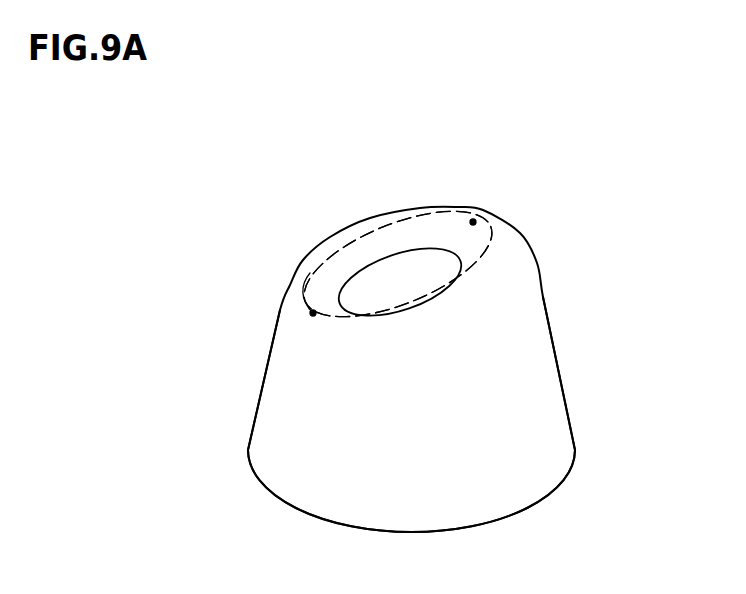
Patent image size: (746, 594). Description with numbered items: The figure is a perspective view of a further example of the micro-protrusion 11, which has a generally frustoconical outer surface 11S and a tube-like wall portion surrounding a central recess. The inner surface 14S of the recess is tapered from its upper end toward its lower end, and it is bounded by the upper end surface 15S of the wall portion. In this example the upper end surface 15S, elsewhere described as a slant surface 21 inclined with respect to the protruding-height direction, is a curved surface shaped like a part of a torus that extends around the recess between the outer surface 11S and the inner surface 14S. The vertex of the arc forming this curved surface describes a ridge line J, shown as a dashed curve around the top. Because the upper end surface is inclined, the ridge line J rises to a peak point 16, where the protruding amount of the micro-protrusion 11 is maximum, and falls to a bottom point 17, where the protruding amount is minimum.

The micro-protrusion 11 is at (608, 305).
The outer surface 11S is at (290, 400).
The inner surface 14S is at (378, 300).
The upper end surface 15S is at (458, 212).
The slant surface 21 is at (397, 263).
The peak point 16 is at (473, 222).
The bottom point 17 is at (313, 313).
The ridge line J is at (392, 220).